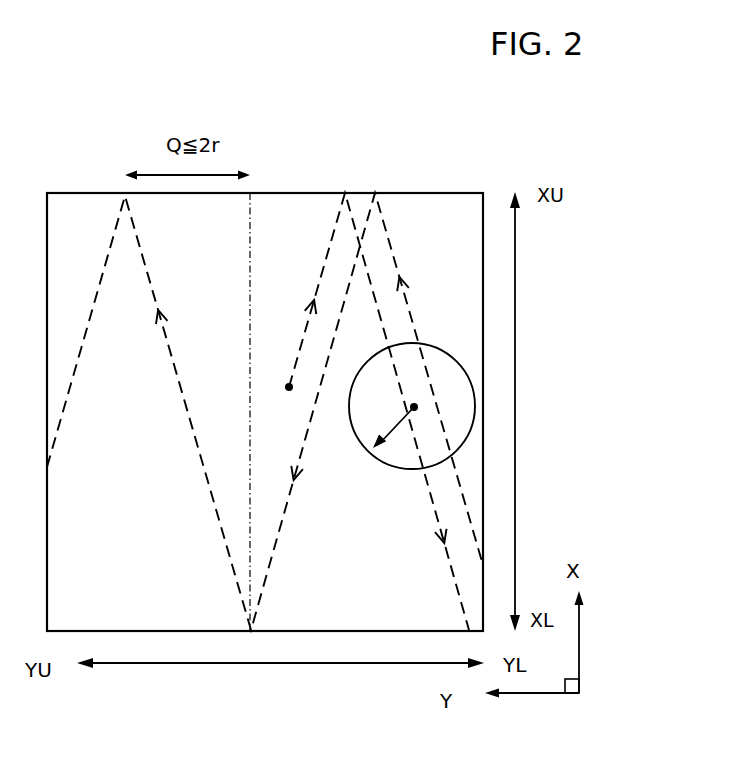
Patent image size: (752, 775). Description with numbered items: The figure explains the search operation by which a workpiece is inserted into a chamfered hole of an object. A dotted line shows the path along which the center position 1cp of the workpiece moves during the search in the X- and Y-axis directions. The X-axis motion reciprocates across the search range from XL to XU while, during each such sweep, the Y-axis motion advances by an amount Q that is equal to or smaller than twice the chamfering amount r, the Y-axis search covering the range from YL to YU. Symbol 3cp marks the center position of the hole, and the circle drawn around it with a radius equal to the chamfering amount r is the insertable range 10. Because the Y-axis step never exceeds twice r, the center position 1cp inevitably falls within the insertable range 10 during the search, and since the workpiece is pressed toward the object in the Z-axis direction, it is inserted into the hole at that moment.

The insertable range 10 is at (462, 371).
The center position of the workpiece 1cp is at (287, 385).
The center position of the hole 3cp is at (414, 407).
The chamfering amount r is at (392, 426).